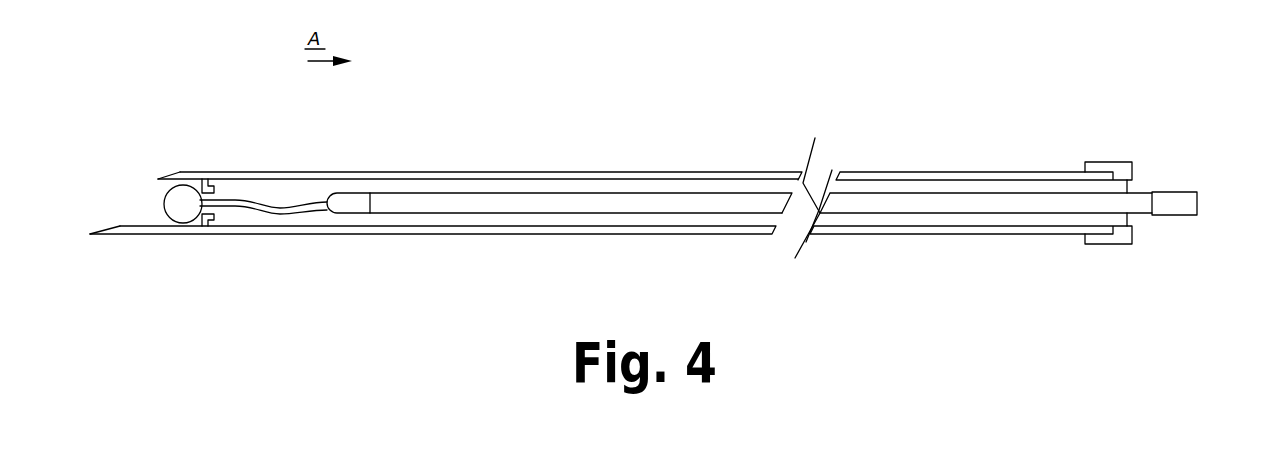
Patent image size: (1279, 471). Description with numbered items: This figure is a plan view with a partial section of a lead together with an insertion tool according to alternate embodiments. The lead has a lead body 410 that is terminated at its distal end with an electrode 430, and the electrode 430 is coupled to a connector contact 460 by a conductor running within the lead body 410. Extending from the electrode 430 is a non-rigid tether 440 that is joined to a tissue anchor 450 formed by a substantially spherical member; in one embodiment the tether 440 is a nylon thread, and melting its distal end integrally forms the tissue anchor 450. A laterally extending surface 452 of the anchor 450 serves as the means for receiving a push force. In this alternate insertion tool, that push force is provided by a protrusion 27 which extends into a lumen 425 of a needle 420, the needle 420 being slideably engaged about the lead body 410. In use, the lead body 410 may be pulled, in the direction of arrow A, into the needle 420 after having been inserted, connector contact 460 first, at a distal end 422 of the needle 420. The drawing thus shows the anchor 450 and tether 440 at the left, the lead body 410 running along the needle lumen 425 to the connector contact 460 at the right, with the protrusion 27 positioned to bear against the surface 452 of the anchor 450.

The protrusion 27 is at (223, 215).
The lead body 410 is at (543, 203).
The needle 420 is at (435, 229).
The distal end of needle 422 is at (131, 202).
The lumen 425 is at (330, 218).
The electrode 430 is at (349, 203).
The non-rigid tether 440 is at (253, 207).
The tissue anchor 450 is at (182, 193).
The laterally extending surface 452 is at (212, 193).
The connector contact 460 is at (1172, 212).